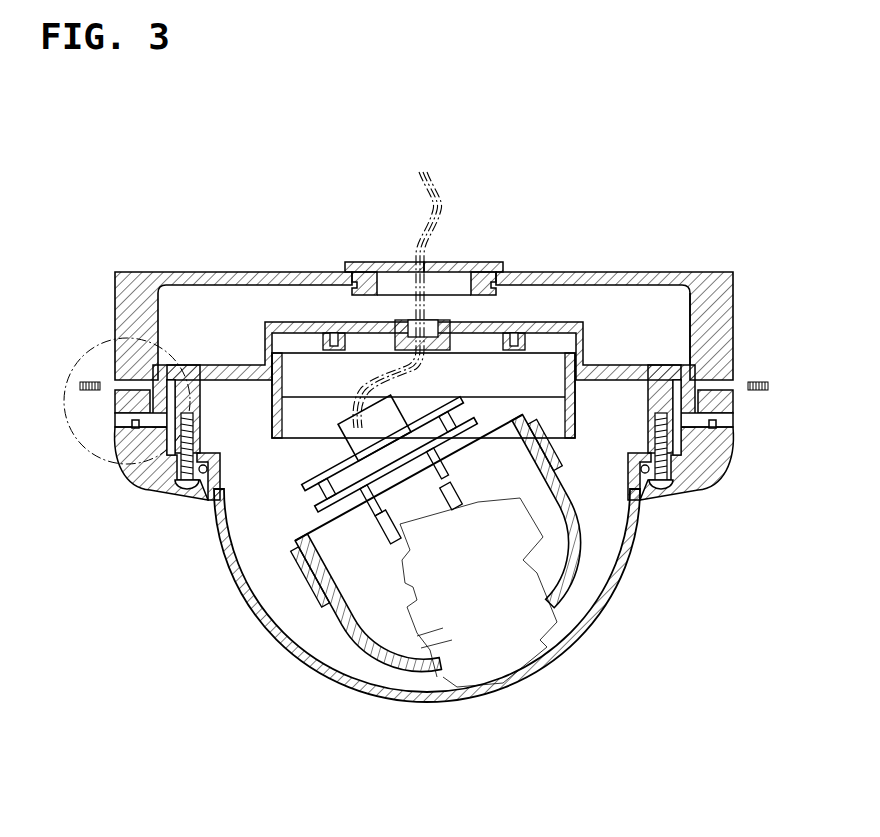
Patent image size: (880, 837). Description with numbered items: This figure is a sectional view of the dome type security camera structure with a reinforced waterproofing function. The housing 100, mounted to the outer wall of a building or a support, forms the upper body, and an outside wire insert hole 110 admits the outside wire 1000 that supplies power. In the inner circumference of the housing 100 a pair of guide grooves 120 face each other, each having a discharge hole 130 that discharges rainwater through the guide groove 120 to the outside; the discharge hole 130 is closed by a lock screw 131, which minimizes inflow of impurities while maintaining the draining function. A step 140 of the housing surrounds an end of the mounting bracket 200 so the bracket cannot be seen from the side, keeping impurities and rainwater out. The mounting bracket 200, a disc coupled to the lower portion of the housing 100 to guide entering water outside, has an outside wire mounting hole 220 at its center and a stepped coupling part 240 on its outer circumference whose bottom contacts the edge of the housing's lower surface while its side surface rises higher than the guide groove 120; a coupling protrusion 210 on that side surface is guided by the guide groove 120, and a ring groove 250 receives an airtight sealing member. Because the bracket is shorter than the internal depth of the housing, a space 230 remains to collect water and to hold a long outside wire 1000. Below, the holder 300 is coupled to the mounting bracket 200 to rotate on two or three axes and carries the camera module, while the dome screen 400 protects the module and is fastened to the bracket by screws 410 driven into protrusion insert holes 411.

The housing 100 is at (637, 272).
The outside wire insert hole 110 is at (414, 262).
The guide groove 120 is at (177, 363).
The discharge hole 130 is at (112, 388).
The lock screw 131 is at (90, 382).
The step 140 is at (136, 428).
The mounting bracket 200 is at (212, 370).
The coupling protrusion 210 is at (114, 410).
The outside wire mounting hole 220 is at (432, 337).
The space 230 is at (677, 317).
The coupling part 240 is at (165, 455).
The ring groove 250 is at (161, 529).
The holder 300 is at (340, 638).
The dome screen 400 is at (240, 608).
The screw 410 is at (663, 488).
The protrusion insert hole 411 is at (672, 490).
The outside wire 1000 is at (440, 203).